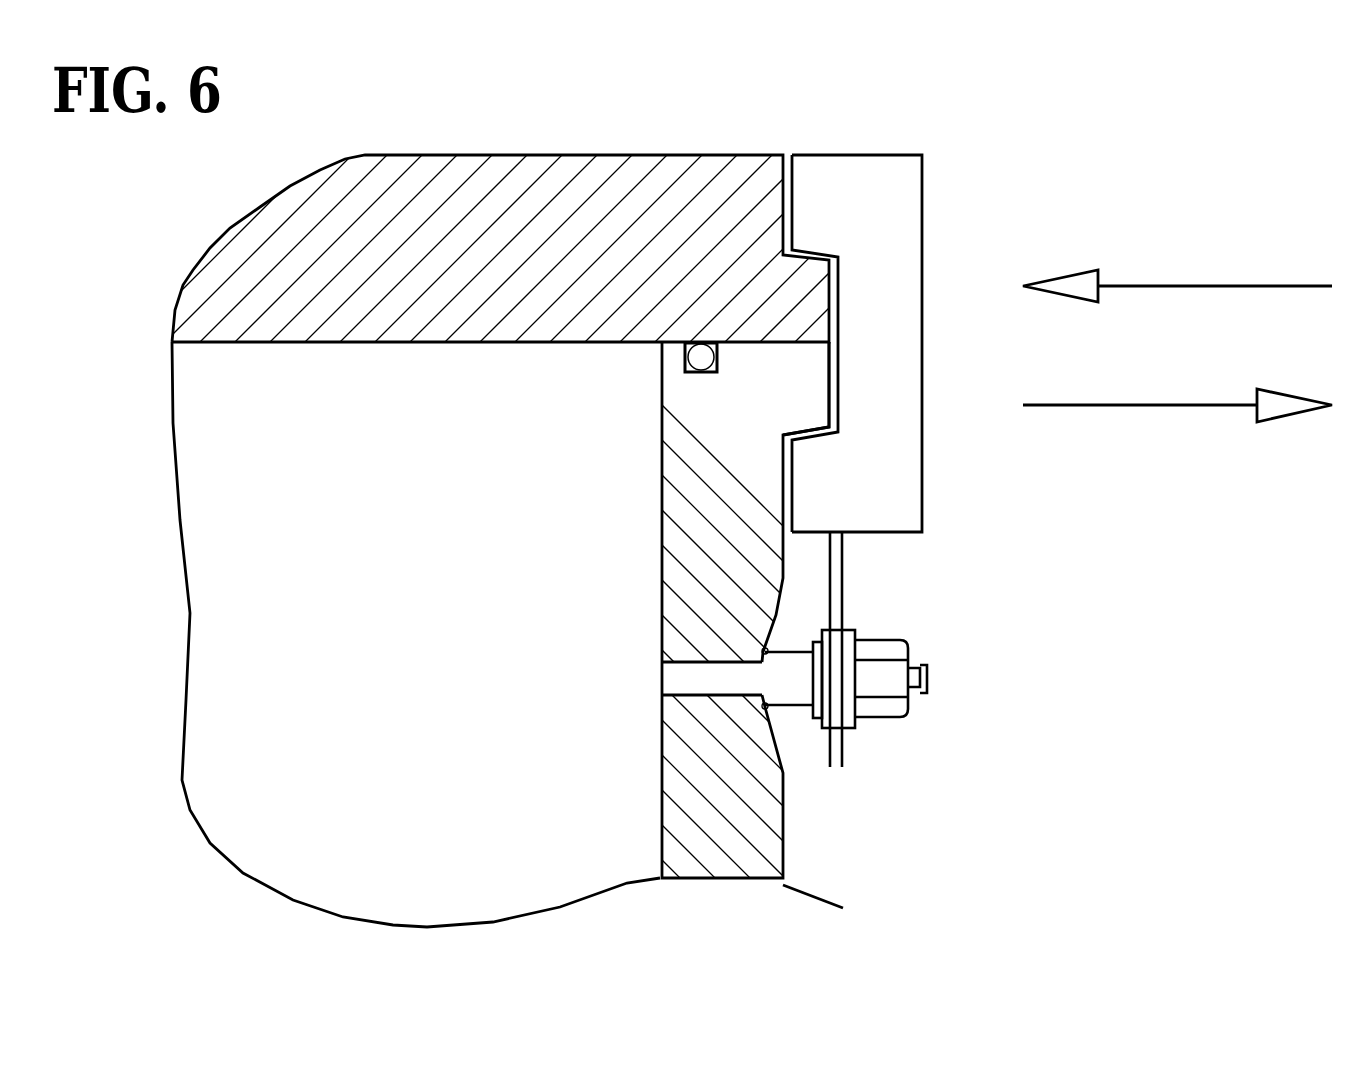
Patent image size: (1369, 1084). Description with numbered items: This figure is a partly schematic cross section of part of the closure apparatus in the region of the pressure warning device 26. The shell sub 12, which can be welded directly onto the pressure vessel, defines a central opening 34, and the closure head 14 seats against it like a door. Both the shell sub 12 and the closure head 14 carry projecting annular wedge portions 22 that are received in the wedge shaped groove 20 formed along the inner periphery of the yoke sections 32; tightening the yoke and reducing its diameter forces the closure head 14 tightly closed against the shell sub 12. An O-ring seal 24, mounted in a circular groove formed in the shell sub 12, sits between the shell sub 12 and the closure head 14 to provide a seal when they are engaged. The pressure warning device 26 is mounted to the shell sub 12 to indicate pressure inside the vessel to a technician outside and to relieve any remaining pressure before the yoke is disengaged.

The shell sub 12 is at (661, 507).
The closure head 14 is at (541, 185).
The wedge shaped groove 20 is at (838, 293).
The annular wedge portions 22 is at (805, 382).
The O-ring seal 24 is at (703, 365).
The pressure warning device 26 is at (918, 625).
The yoke sections 32 is at (887, 447).
The central opening 34 is at (661, 593).